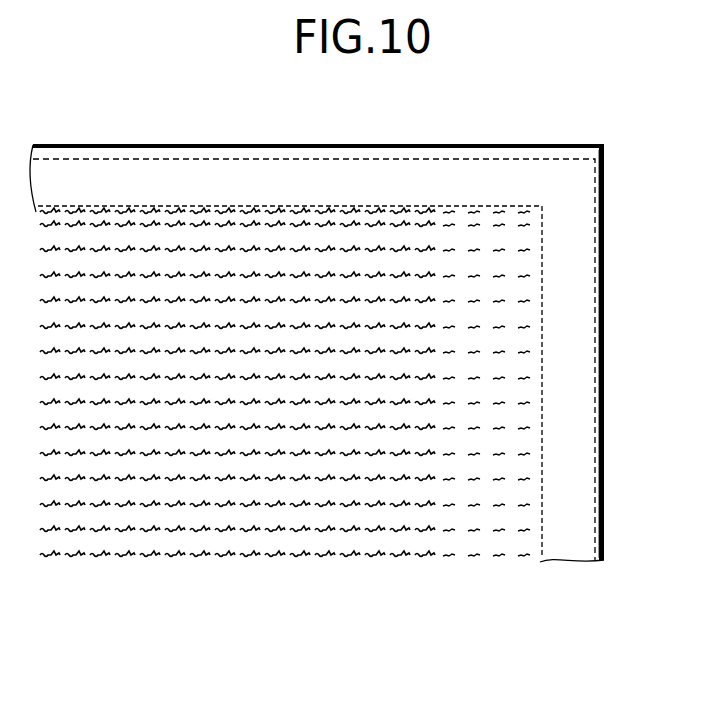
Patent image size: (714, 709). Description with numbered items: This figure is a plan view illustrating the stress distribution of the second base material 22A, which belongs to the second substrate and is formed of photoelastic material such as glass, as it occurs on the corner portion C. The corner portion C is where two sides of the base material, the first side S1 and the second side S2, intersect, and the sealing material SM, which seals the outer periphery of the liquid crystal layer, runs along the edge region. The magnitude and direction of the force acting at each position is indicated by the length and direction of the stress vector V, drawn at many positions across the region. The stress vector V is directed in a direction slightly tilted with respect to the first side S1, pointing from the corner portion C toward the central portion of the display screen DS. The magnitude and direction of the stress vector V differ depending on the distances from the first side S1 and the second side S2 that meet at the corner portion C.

The corner portion C is at (612, 211).
The first side S1 is at (253, 207).
The second side S2 is at (540, 398).
The stress vector V is at (93, 275).
The display screen DS is at (433, 225).
The second base material 22A is at (604, 456).
The sealing material SM is at (577, 547).